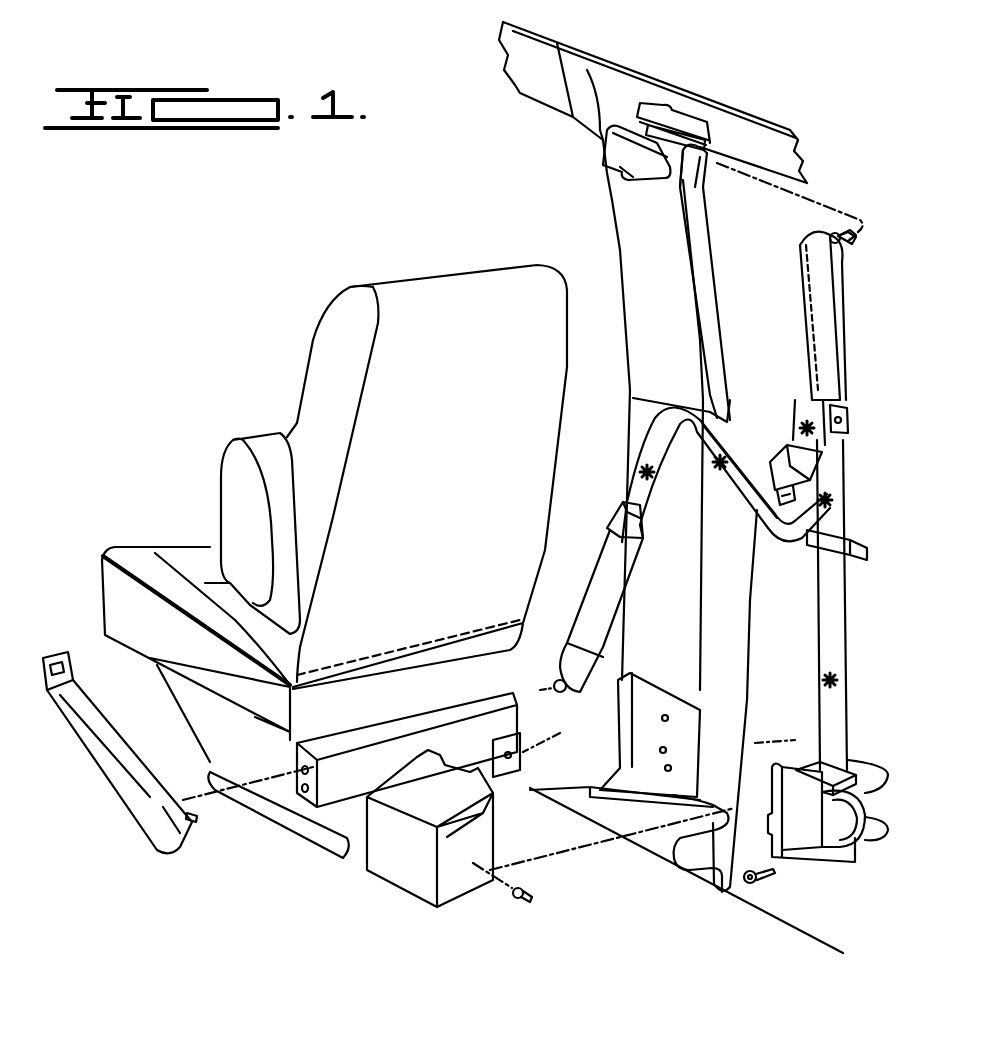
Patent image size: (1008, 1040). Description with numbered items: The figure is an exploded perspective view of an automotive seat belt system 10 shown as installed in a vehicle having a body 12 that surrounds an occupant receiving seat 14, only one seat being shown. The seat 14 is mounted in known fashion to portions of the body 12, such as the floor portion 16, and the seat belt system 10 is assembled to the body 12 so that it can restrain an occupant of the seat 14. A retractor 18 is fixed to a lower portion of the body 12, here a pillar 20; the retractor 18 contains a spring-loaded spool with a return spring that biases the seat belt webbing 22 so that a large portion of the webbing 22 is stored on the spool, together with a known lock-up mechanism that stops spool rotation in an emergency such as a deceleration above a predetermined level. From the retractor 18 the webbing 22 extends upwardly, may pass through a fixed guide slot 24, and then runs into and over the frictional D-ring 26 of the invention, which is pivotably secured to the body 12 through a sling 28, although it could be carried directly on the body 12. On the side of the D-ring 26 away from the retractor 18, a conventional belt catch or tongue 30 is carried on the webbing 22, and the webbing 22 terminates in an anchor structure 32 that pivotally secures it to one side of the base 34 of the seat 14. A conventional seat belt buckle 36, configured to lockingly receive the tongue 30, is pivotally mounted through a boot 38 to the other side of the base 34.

The automotive seat belt system 10 is at (860, 481).
The body 12 is at (727, 130).
The seat 14 is at (417, 300).
The floor portion 16 is at (530, 793).
The retractor 18 is at (845, 827).
The pillar 20 is at (680, 688).
The seat belt webbing 22 is at (827, 643).
The fixed guide slot 24 is at (830, 548).
The frictional D-ring 26 is at (856, 403).
The sling 28 is at (815, 323).
The tongue 30 is at (770, 452).
The anchor structure 32 is at (607, 583).
The base 34 is at (500, 725).
The seat belt buckle 36 is at (63, 660).
The boot 38 is at (120, 777).